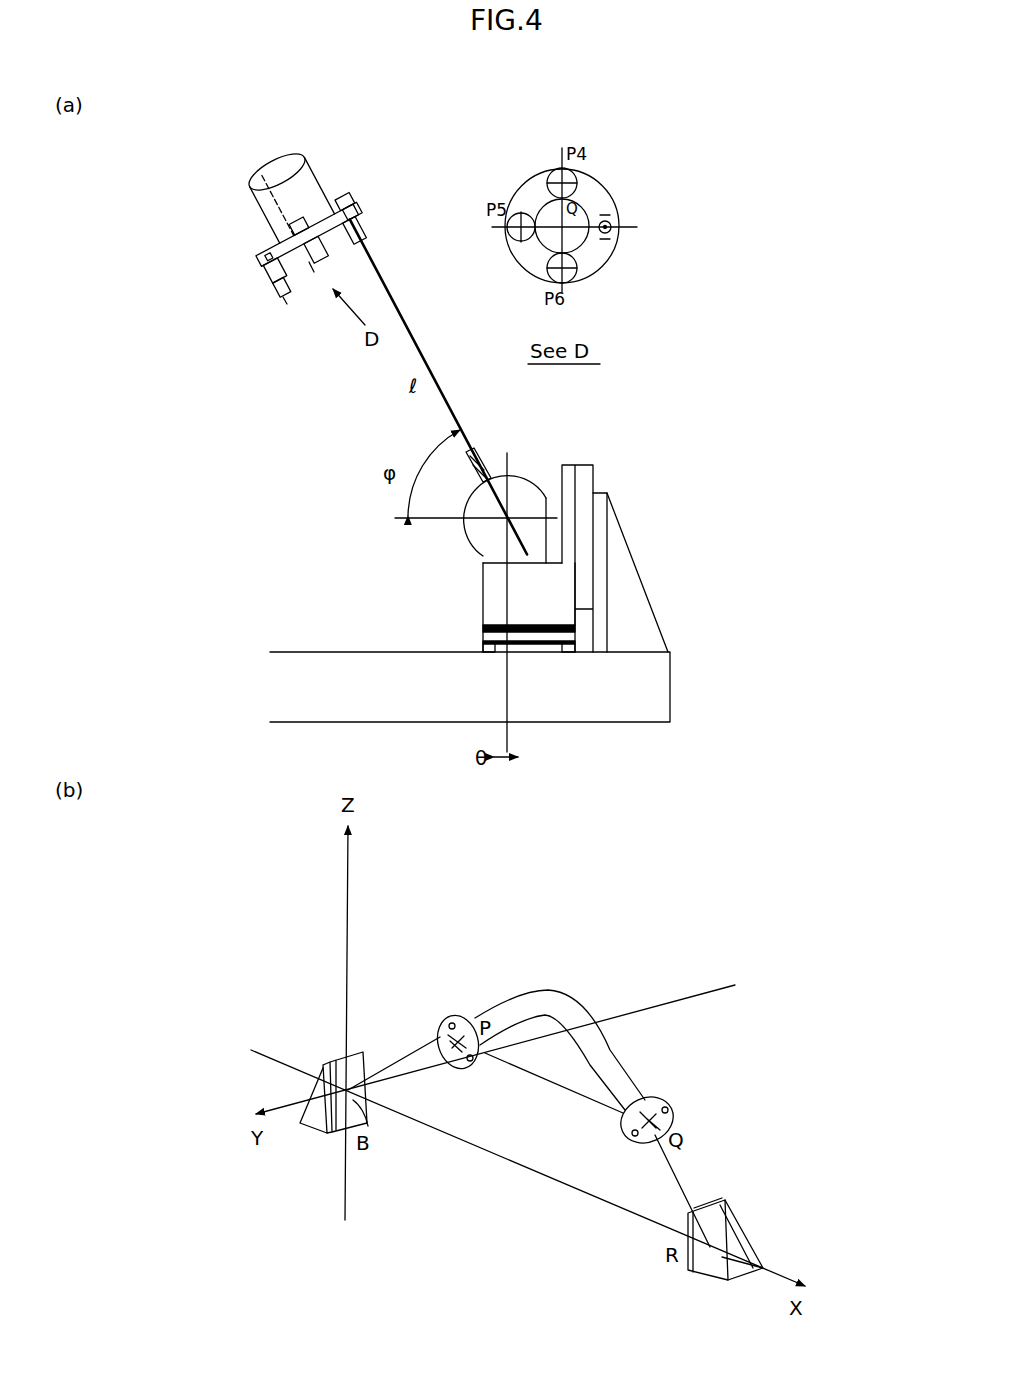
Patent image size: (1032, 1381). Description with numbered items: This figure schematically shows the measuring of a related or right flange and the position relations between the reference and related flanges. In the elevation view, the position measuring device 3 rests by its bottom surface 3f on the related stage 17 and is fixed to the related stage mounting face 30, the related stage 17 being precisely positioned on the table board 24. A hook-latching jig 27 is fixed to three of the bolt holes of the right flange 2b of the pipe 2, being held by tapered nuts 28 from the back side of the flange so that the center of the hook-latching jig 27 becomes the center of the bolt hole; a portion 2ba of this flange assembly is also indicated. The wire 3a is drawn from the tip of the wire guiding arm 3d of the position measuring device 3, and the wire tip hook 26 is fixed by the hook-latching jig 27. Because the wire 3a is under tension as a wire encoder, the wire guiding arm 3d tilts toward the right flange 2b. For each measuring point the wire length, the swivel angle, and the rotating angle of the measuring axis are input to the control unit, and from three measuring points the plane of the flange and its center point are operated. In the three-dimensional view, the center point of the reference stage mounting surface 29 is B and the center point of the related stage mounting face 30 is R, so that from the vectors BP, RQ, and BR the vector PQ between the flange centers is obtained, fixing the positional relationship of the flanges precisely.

The pipe 2 is at (292, 190).
The right flange 2b is at (350, 216).
The plate bolt portion 2ba is at (312, 278).
The nuts 28 is at (333, 206).
The hook-latching jig 27 is at (366, 230).
The wire tip hook 26 is at (370, 257).
The wire 3a is at (400, 318).
The wire guiding arm 3d is at (488, 463).
The position measuring device 3 is at (451, 568).
The bottom surface 3f is at (520, 656).
The related stage 17 is at (637, 598).
The table board 24 is at (372, 690).
The related stage mounting face 30 is at (586, 641).
The reference stage mounting surface 29 is at (352, 1062).